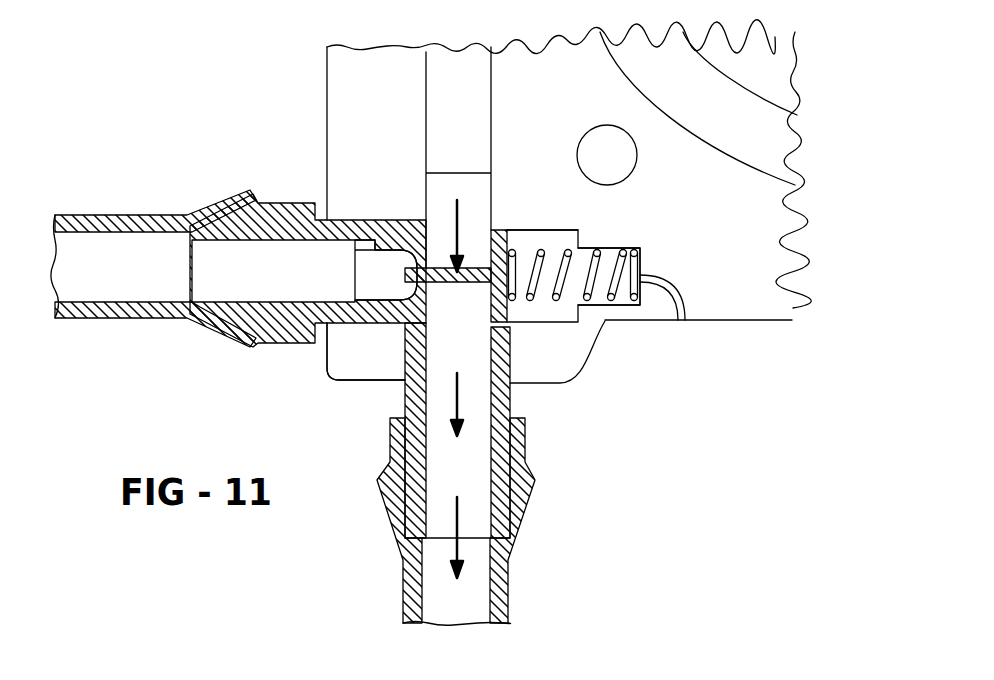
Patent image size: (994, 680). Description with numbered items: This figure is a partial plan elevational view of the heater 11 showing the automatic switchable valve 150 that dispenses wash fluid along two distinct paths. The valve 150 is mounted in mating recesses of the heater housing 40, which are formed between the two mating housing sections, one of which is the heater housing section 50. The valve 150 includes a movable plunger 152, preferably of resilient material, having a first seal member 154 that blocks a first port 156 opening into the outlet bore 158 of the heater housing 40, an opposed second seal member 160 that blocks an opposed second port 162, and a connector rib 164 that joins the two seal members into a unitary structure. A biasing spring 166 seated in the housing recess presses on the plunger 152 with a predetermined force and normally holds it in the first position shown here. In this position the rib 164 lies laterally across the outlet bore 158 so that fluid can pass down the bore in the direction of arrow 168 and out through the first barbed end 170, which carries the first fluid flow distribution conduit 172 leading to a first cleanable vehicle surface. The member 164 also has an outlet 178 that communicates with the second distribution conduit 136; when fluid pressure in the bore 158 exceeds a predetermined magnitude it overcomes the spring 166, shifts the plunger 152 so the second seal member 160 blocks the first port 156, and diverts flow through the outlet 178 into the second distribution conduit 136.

The heater 11 is at (768, 304).
The heater housing 40 is at (719, 308).
The heater housing section 50 is at (752, 322).
The second distribution conduit 136 is at (135, 215).
The valve 150 is at (631, 381).
The plunger 152 is at (510, 230).
The first seal member 154 is at (500, 275).
The first port 156 is at (540, 232).
The outlet bore 158 is at (490, 152).
The second seal member 160 is at (400, 242).
The second port 162 is at (402, 328).
The connector rib 164 is at (440, 284).
The biasing spring 166 is at (595, 290).
The arrow 168 is at (440, 545).
The first barbed end 170 is at (507, 500).
The first fluid flow distribution conduit 172 is at (510, 598).
The outlet 178 is at (338, 222).